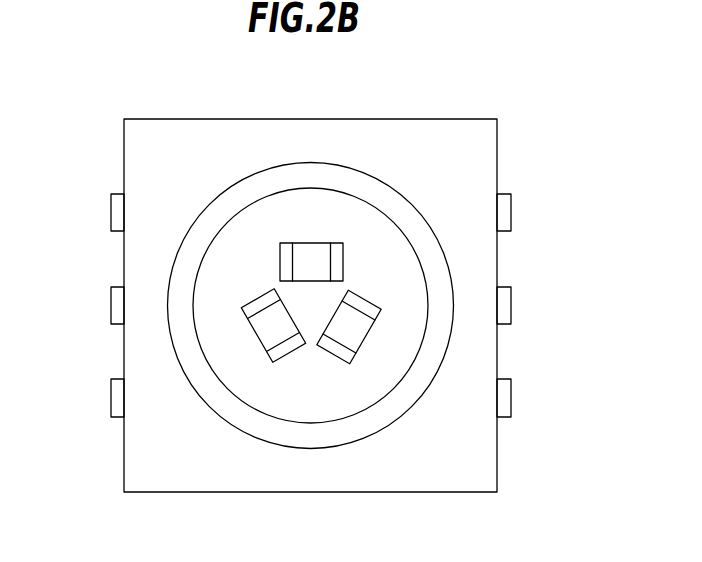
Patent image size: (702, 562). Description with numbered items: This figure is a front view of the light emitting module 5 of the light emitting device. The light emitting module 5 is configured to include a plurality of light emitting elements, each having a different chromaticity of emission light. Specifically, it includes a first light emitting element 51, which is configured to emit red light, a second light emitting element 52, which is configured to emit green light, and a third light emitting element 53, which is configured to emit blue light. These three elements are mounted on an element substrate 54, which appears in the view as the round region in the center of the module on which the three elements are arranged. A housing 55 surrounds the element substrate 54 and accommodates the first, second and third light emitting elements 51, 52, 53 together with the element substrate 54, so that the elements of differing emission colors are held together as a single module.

The light emitting module 5 is at (128, 98).
The first light emitting element 51 is at (317, 257).
The second light emitting element 52 is at (353, 318).
The third light emitting element 53 is at (275, 332).
The element substrate 54 is at (222, 290).
The housing 55 is at (240, 143).